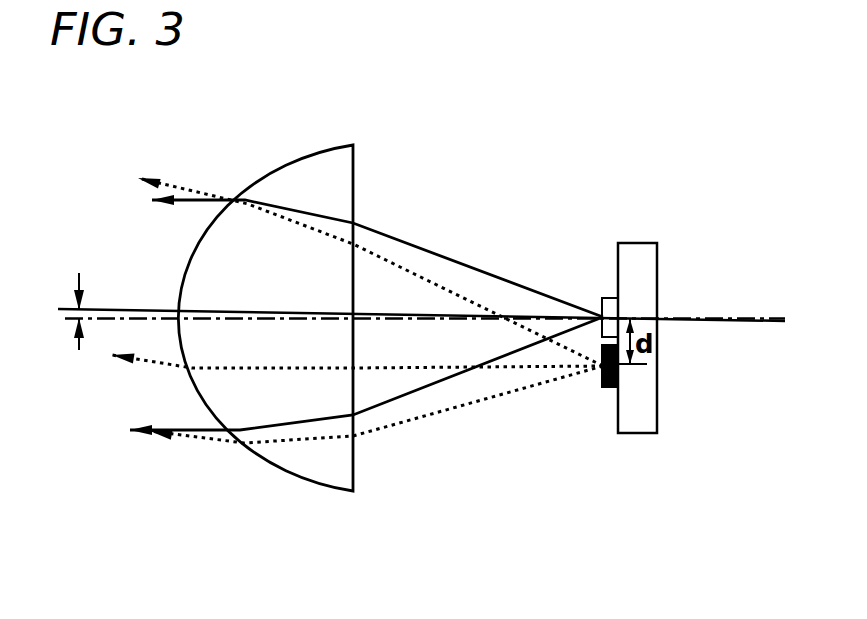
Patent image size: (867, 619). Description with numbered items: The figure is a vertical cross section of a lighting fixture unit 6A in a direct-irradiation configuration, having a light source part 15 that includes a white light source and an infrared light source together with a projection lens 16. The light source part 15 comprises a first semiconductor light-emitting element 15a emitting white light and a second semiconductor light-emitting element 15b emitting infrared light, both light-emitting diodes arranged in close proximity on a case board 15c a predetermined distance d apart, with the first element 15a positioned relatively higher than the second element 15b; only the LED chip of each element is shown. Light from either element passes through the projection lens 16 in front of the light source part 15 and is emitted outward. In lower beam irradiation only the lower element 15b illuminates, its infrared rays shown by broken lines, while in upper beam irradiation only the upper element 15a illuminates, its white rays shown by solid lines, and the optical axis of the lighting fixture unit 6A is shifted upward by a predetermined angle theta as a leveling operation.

The lighting fixture unit 6A is at (546, 150).
The light source part 15 is at (657, 262).
The first semiconductor light-emitting element 15a is at (602, 298).
The second semiconductor light-emitting element 15b is at (610, 384).
The case board 15c is at (645, 406).
The projection lens 16 is at (310, 472).